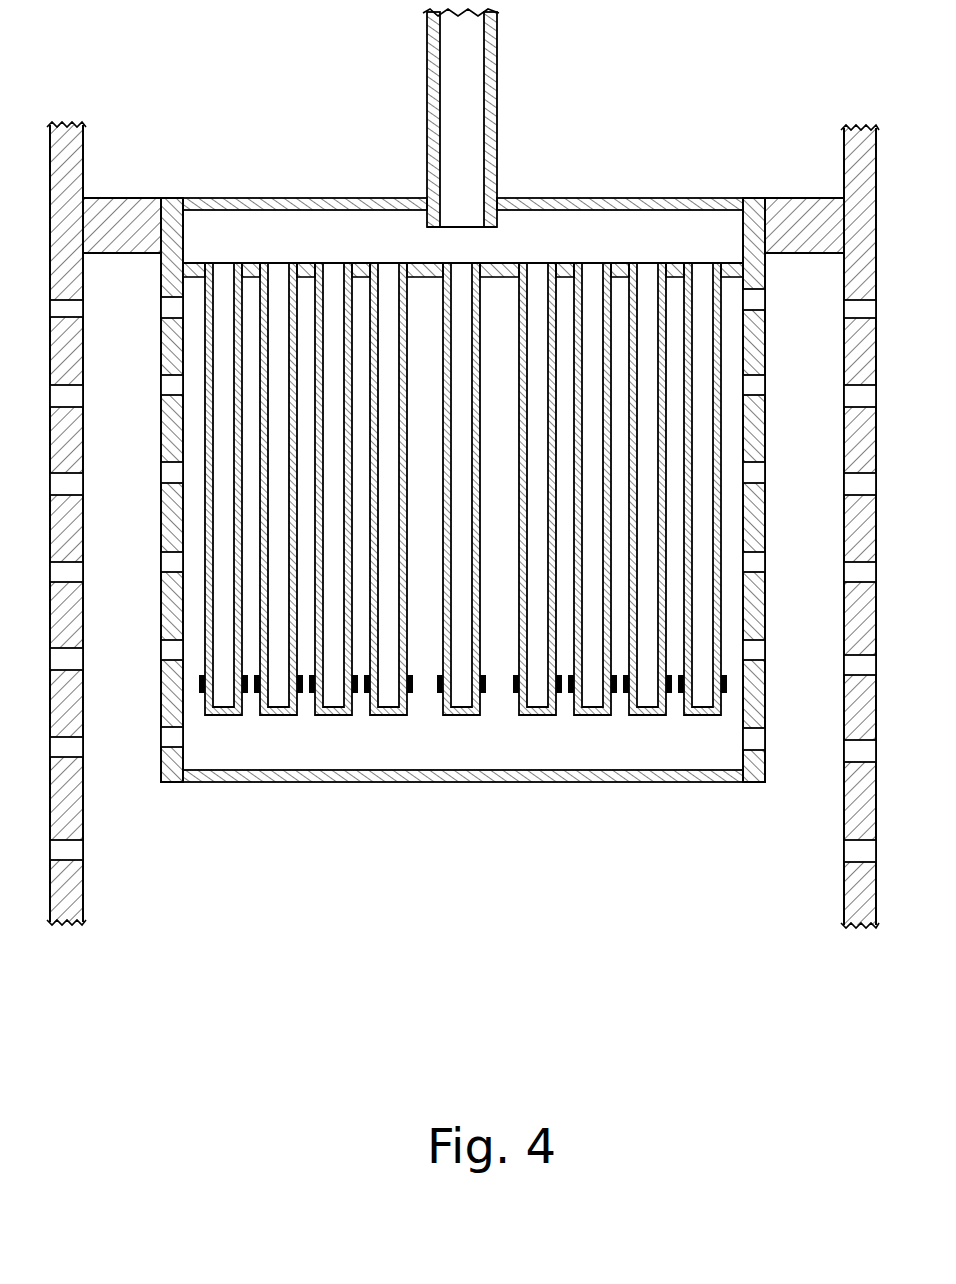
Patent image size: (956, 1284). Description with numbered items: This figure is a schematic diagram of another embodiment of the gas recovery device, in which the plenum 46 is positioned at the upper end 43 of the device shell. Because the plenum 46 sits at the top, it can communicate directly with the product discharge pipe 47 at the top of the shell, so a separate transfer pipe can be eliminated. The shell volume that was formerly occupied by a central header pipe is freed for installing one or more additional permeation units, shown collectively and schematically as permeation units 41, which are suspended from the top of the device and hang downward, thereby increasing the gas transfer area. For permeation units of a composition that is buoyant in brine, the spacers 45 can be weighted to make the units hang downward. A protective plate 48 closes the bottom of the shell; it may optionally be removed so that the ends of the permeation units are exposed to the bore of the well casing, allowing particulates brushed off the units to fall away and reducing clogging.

The permeation units 41 is at (447, 703).
The upper end of the gas recovery device shell 43 is at (348, 198).
The spacers 45 is at (507, 695).
The plenum 46 is at (622, 230).
The product discharge pipe 47 is at (497, 143).
The protective plate 48 is at (487, 782).